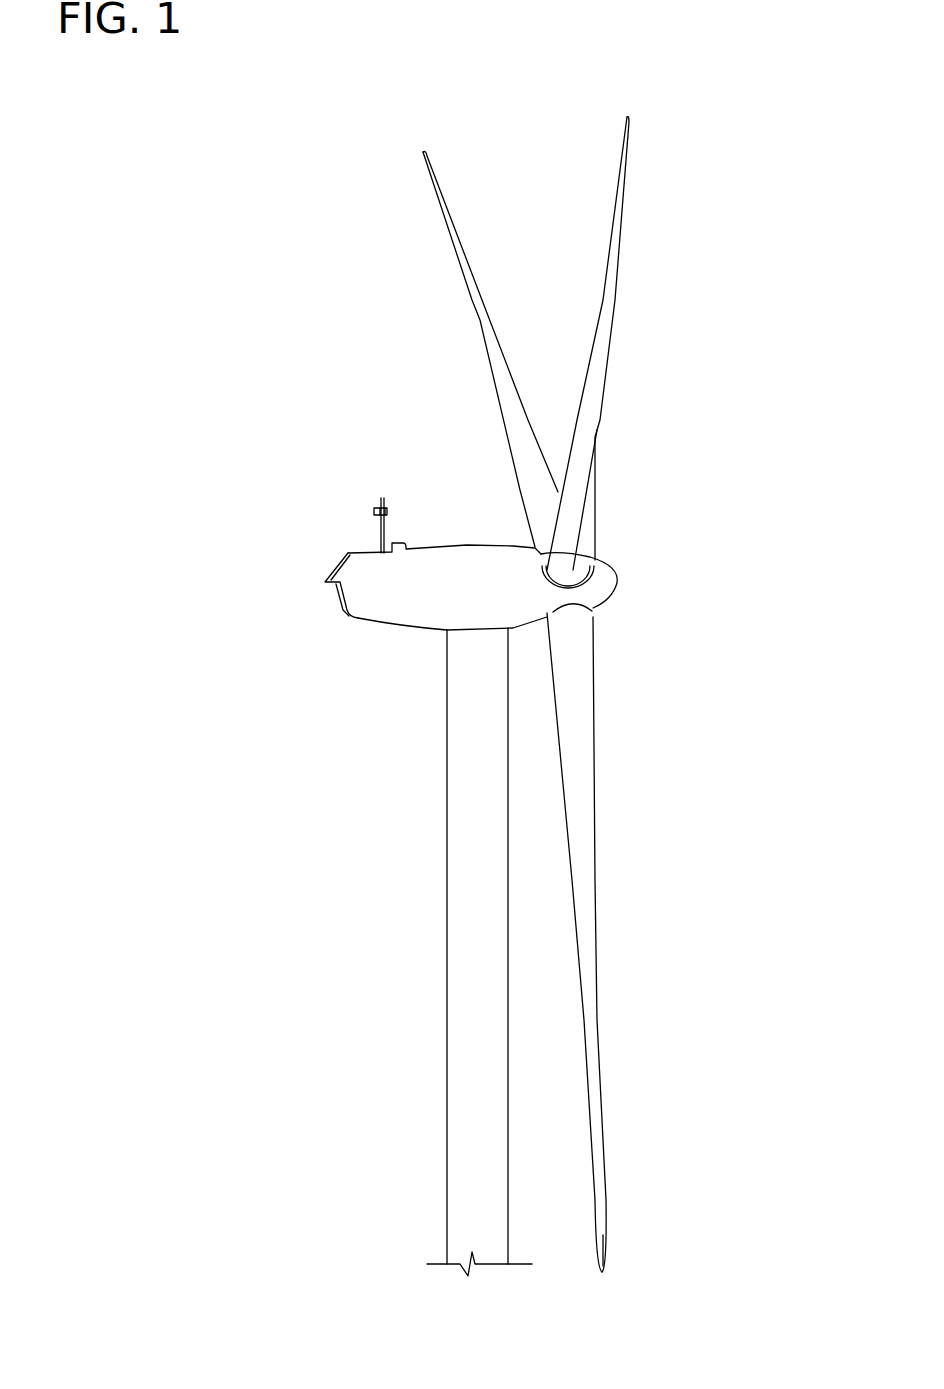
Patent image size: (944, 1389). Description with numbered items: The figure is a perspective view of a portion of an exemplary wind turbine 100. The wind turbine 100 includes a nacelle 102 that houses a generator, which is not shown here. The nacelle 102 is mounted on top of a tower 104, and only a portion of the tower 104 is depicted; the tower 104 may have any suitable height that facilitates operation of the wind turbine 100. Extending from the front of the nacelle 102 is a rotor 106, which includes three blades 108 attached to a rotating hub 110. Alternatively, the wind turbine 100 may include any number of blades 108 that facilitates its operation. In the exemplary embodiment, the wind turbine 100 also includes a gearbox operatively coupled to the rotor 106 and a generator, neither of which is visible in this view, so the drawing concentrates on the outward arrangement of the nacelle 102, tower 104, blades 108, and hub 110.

The wind turbine 100 is at (310, 195).
The nacelle 102 is at (372, 628).
The tower 104 is at (446, 898).
The rotor 106 is at (672, 328).
The blades 108 is at (462, 235).
The rotating hub 110 is at (610, 597).